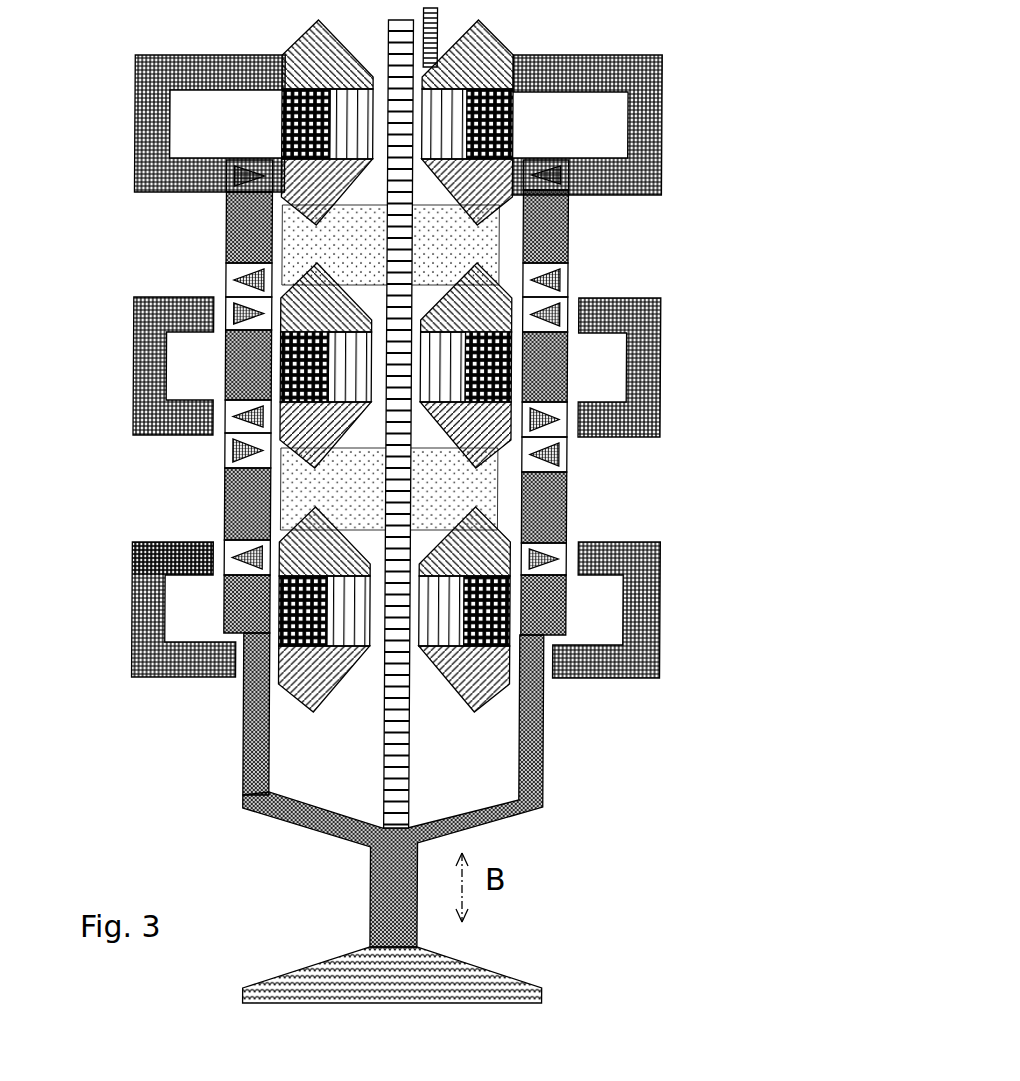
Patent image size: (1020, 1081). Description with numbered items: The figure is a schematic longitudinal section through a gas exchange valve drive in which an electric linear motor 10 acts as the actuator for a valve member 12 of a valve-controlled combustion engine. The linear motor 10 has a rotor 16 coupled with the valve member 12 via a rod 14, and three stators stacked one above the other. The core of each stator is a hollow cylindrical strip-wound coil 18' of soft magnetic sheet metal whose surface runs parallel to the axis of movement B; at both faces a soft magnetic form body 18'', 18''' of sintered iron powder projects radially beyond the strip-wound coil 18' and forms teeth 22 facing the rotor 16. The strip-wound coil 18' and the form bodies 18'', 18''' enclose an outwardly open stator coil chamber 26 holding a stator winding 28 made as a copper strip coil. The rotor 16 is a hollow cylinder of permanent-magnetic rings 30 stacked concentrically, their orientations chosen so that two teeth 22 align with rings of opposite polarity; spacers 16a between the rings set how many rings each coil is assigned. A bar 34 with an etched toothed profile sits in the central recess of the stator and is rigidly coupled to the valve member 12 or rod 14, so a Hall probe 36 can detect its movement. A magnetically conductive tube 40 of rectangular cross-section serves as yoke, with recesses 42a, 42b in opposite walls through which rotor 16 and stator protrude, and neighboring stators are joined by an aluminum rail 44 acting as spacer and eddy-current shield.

The electric linear motor 10 is at (449, 505).
The valve member 12 is at (452, 967).
The rod 14 is at (545, 801).
The rotor 16 is at (559, 137).
The spacers 16a is at (224, 242).
The strip-wound coil 18' is at (624, 324).
The form body 18'' is at (626, 260).
The form body 18''' is at (640, 461).
The teeth 22 is at (275, 435).
The stator coil chamber 26 is at (262, 120).
The stator winding 28 is at (507, 340).
The permanent-magnetic rings 30 is at (224, 202).
The bar 34 is at (383, 757).
The Hall probe 36 is at (440, 22).
The magnetically conductive tube 40 is at (135, 655).
The recess 42a is at (213, 548).
The recess 42b is at (242, 660).
The aluminum rail 44 is at (490, 527).